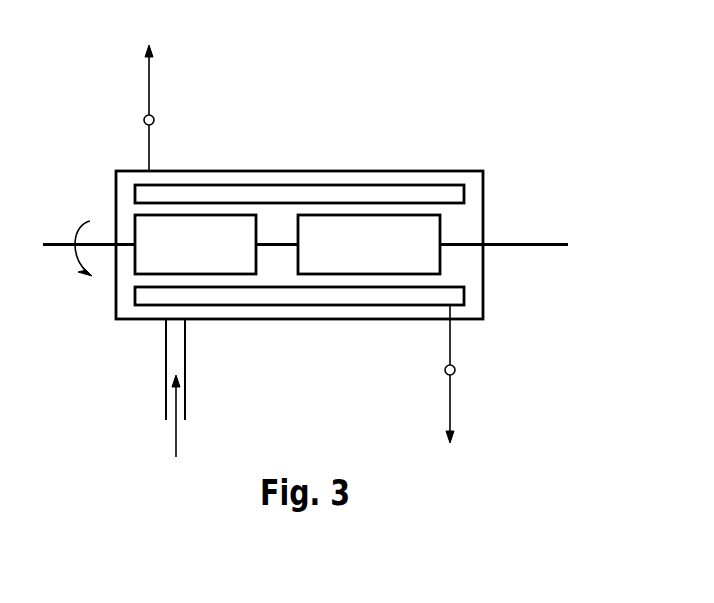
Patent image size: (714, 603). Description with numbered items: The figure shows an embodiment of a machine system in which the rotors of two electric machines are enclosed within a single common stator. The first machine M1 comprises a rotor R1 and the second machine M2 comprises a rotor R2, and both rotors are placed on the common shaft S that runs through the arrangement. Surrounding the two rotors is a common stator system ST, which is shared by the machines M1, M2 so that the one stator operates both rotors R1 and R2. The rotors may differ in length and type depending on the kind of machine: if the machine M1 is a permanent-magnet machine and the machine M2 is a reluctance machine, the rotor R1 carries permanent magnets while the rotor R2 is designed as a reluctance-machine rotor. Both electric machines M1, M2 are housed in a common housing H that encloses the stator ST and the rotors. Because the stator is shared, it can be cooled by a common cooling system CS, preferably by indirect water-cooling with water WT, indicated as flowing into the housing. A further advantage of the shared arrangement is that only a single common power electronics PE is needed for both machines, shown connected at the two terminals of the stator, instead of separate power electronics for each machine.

The common housing H is at (475, 319).
The common shaft S is at (555, 245).
The common stator system ST is at (465, 193).
The machine M1 is at (226, 176).
The machine M2 is at (377, 176).
The rotor R1 is at (195, 244).
The rotor R2 is at (369, 244).
The common power electronics PE is at (306, 261).
The common cooling system CS is at (166, 392).
The water WT is at (195, 417).